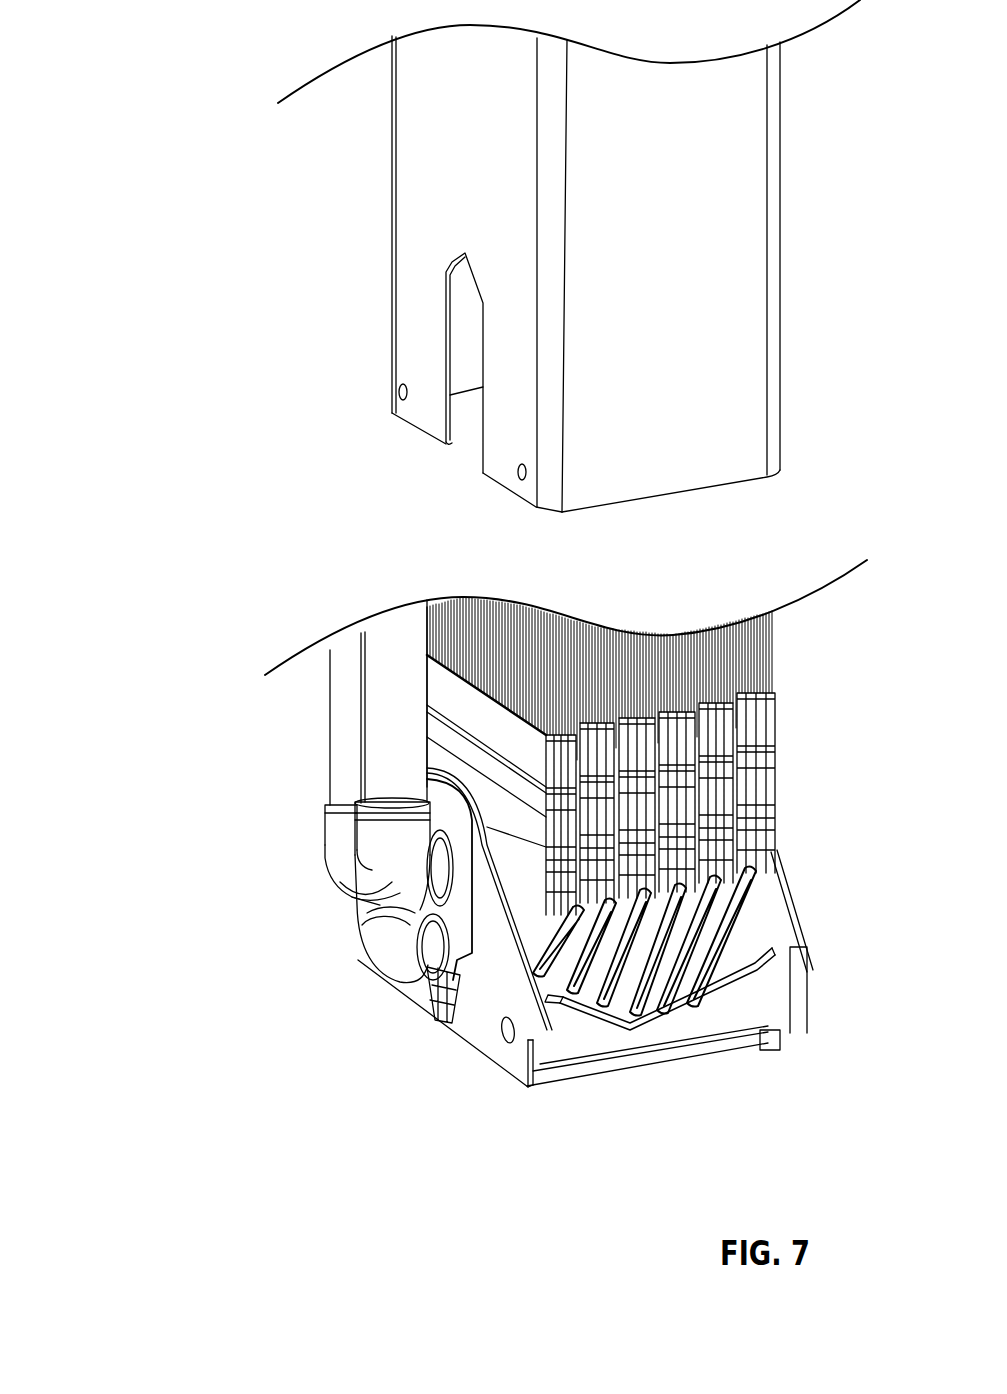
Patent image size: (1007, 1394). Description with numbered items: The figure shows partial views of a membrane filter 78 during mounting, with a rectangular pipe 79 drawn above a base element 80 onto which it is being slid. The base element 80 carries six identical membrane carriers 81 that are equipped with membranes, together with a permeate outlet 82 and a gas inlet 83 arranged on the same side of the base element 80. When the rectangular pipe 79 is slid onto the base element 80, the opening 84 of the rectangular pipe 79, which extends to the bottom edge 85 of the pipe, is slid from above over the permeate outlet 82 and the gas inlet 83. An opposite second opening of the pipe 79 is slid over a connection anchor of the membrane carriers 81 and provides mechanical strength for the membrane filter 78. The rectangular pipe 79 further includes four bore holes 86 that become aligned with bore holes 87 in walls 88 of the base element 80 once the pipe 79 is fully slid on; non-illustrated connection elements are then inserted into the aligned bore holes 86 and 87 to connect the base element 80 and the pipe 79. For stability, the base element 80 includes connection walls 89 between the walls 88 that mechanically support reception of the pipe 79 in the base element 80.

The membrane filter 78 is at (143, 362).
The rectangular pipe 79 is at (733, 212).
The base element 80 is at (250, 853).
The membrane carriers 81 is at (727, 812).
The permeate outlet 82 is at (413, 882).
The gas inlet 83 is at (400, 947).
The opening 84 is at (462, 345).
The bottom edge 85 is at (717, 485).
The bore holes 86 is at (515, 473).
The bore holes 87 is at (503, 1035).
The walls 88 is at (518, 1060).
The connection walls 89 is at (653, 1037).